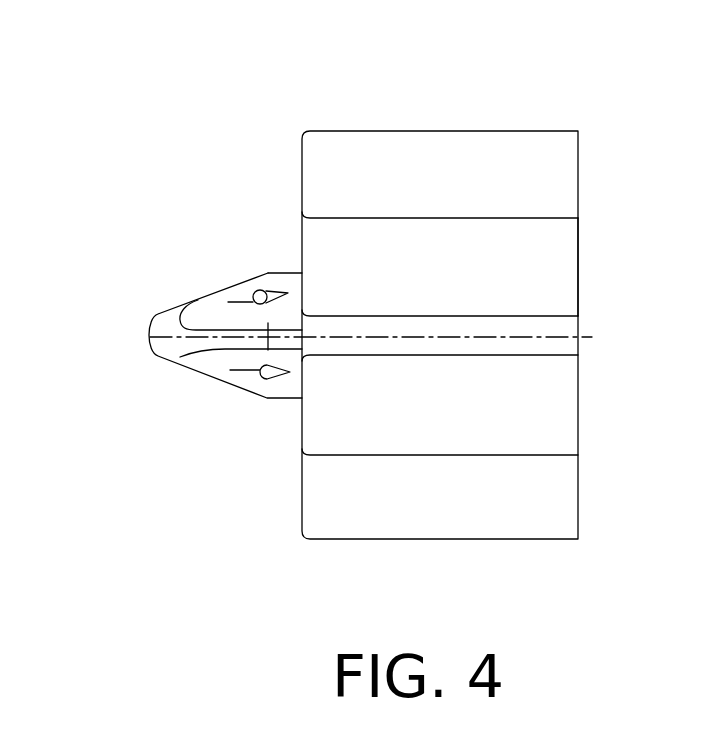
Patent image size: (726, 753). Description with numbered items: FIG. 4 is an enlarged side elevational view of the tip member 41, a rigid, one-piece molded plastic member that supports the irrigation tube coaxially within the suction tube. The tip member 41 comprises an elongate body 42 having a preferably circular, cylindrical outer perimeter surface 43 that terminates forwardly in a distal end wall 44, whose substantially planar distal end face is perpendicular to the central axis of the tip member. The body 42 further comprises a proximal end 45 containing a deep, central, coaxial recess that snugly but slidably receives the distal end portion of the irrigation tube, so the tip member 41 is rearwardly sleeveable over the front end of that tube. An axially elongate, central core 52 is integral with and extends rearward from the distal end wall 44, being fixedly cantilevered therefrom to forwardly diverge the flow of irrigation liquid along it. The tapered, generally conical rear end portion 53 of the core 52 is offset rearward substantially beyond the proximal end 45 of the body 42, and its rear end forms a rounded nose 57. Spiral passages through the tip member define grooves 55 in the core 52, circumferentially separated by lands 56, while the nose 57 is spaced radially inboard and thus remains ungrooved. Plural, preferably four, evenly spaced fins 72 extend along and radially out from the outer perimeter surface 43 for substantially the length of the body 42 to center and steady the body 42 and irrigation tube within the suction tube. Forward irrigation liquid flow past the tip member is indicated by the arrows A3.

The tip member 41 is at (600, 132).
The elongate body 42 is at (586, 228).
The outer perimeter surface 43 is at (413, 240).
The distal end wall 44 is at (580, 298).
The proximal end 45 is at (302, 437).
The core 52 is at (235, 302).
The conical rear end portion 53 is at (193, 343).
The grooves 55 is at (242, 328).
The lands 56 is at (287, 277).
The rounded nose 57 is at (147, 340).
The fins 72 is at (460, 165).
The irrigation liquid flow arrow A3 is at (250, 250).